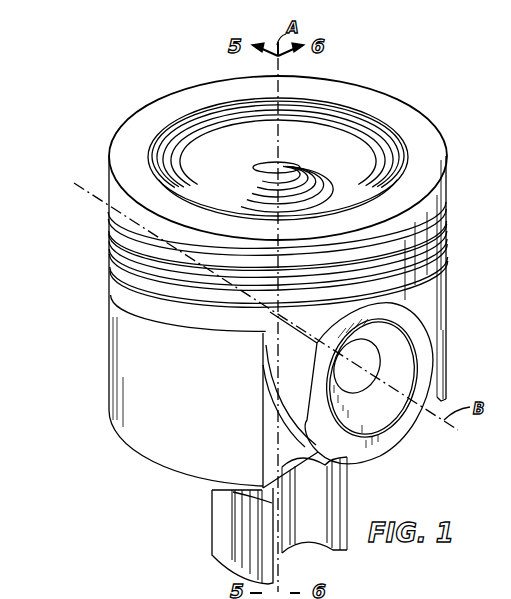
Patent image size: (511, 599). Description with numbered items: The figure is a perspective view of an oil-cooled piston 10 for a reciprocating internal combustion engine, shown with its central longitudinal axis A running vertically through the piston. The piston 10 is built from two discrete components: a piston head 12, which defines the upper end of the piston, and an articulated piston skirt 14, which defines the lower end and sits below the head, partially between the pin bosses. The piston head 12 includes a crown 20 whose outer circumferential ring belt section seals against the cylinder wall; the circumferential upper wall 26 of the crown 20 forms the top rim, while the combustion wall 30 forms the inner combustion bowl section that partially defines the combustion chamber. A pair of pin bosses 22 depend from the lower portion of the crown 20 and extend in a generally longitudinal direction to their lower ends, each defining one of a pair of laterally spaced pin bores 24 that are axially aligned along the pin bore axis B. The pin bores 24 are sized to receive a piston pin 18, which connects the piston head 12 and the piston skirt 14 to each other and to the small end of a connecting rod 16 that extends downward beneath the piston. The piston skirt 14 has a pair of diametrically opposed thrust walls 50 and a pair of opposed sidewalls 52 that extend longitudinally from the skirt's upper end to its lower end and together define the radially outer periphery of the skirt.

The piston 10 is at (152, 58).
The piston head 12 is at (150, 109).
The piston skirt 14 is at (109, 387).
The connecting rod 16 is at (212, 540).
The piston pin 18 is at (387, 420).
The crown 20 is at (108, 248).
The pin bosses 22 is at (442, 378).
The pin bores 24 is at (416, 327).
The circumferential upper wall 26 is at (406, 118).
The combustion wall 30 is at (316, 158).
The thrust walls 50 is at (158, 452).
The sidewalls 52 is at (288, 450).